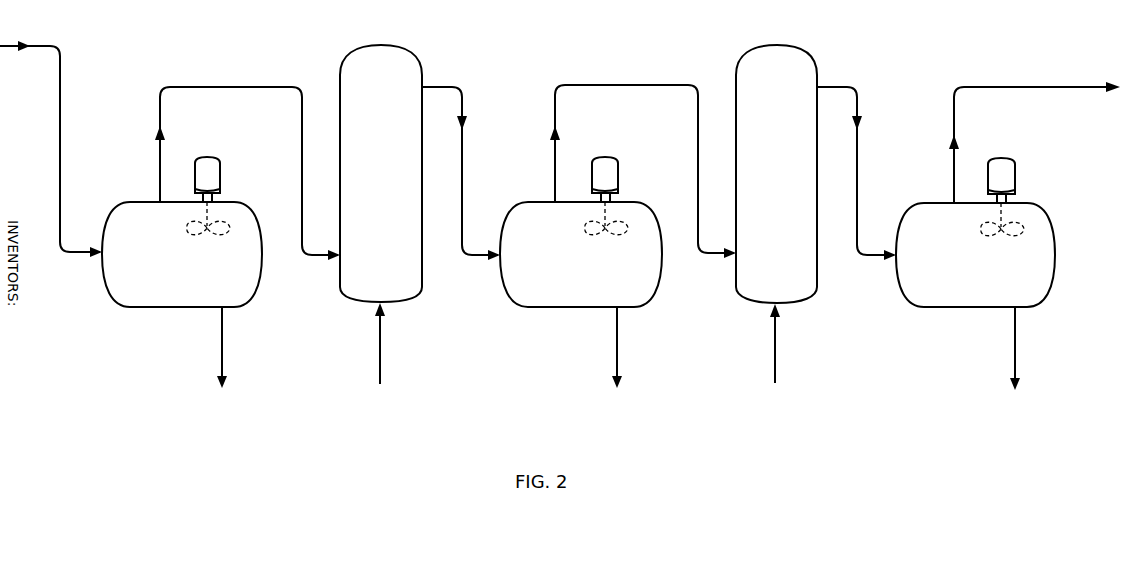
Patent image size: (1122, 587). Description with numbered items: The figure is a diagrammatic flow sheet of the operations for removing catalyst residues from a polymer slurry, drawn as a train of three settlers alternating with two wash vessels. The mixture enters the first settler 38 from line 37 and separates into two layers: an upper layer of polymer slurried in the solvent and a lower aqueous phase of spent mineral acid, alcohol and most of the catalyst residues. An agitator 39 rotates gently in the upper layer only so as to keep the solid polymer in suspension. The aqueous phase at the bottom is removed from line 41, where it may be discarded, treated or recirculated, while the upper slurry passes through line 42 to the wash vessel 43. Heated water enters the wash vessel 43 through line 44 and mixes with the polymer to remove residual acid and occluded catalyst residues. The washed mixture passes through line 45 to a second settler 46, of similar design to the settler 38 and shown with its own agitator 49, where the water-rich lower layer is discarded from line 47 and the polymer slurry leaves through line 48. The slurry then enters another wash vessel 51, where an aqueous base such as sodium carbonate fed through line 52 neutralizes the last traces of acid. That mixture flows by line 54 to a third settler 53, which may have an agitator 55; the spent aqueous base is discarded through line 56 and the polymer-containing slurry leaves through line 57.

The line 37 is at (58, 95).
The settler 38 is at (191, 264).
The agitator 39 is at (212, 220).
The line 41 is at (224, 348).
The line 42 is at (203, 87).
The wash vessel 43 is at (391, 154).
The line 44 is at (382, 346).
The line 45 is at (464, 193).
The settler 46 is at (591, 264).
The line 47 is at (619, 348).
The line 48 is at (598, 85).
The agitator 49 is at (610, 220).
The wash vessel 51 is at (787, 154).
The line 52 is at (777, 347).
The settler 53 is at (985, 264).
The line 54 is at (859, 194).
The agitator 55 is at (1006, 221).
The line 56 is at (1017, 347).
The line 57 is at (1022, 87).